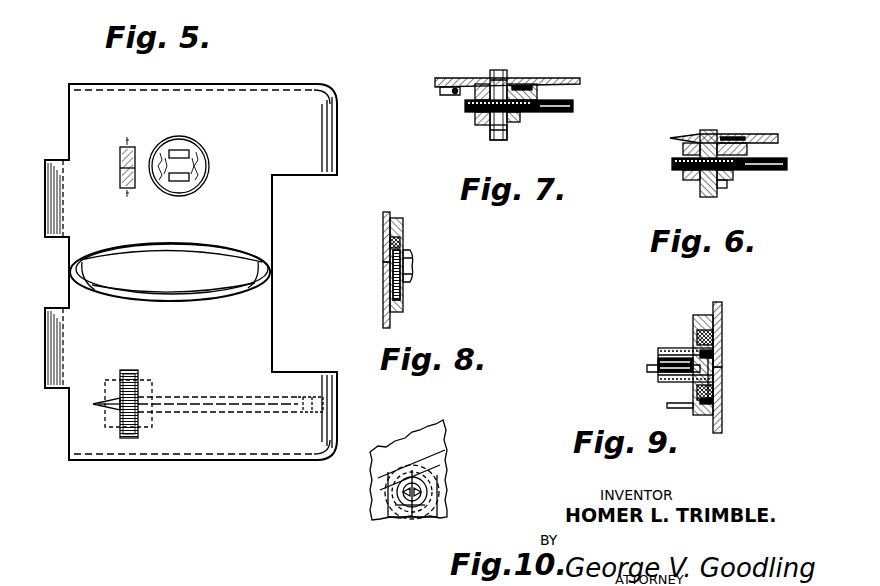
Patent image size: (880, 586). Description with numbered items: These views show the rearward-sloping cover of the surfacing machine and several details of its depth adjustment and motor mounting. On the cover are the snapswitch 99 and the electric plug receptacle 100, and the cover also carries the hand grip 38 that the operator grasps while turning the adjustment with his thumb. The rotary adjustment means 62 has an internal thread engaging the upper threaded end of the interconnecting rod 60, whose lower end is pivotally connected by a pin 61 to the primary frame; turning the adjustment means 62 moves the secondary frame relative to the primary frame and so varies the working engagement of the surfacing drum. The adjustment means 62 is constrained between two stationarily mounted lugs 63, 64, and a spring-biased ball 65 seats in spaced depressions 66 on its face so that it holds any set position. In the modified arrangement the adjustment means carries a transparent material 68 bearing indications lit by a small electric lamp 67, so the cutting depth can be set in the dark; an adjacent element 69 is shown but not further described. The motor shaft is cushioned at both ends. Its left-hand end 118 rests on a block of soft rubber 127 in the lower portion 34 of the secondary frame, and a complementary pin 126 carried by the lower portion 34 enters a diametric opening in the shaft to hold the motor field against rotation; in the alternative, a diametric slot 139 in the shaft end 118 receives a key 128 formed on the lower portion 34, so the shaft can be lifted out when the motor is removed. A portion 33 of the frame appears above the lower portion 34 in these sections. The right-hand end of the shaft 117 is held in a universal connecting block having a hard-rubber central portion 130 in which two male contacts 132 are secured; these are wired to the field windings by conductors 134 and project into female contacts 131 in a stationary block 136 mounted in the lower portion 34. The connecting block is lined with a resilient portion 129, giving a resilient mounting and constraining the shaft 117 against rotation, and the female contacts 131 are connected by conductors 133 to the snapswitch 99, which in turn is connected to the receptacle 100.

In FIG. 8, the front plate 33 is at (383, 226).
In FIG. 9, the front plate 33 is at (722, 318).
In FIG. 10, the front plate 33 is at (378, 478).
In FIG. 7, the lower portion of the secondary frame 34 is at (568, 78).
In FIG. 6, the lower portion of the secondary frame 34 is at (780, 130).
In FIG. 8, the lower portion of the secondary frame 34 is at (383, 312).
In FIG. 9, the lower portion of the secondary frame 34 is at (722, 428).
In FIG. 10, the lower portion of the secondary frame 34 is at (382, 520).
In FIG. 5, the hand grip 38 is at (200, 300).
In FIG. 5, the interconnecting rod 60 is at (244, 412).
In FIG. 7, the interconnecting rod 60 is at (573, 103).
In FIG. 6, the interconnecting rod 60 is at (780, 170).
In FIG. 5, the pin 61 is at (314, 412).
In FIG. 5, the rotary adjustment means 62 is at (120, 428).
In FIG. 6, the rotary adjustment means 62 is at (708, 197).
In FIG. 5, the lug 63 is at (138, 382).
In FIG. 7, the lug 63 is at (520, 117).
In FIG. 6, the lug 63 is at (733, 180).
In FIG. 5, the lug 64 is at (108, 380).
In FIG. 6, the lug 64 is at (692, 180).
In FIG. 7, the ball 65 is at (522, 84).
In FIG. 6, the ball 65 is at (722, 143).
In FIG. 7, the depressions 66 is at (507, 130).
In FIG. 6, the depressions 66 is at (722, 188).
In FIG. 7, the electric lamp 67 is at (455, 95).
In FIG. 7, the transparent material 68 is at (505, 60).
In FIG. 7, the bearing 69 is at (480, 125).
In FIG. 5, the snapswitch 99 is at (120, 168).
In FIG. 5, the electric plug receptacle 100 is at (208, 158).
In FIG. 9, the shaft 117 is at (668, 348).
In FIG. 8, the shaft 118 is at (412, 258).
In FIG. 10, the shaft 118 is at (422, 510).
In FIG. 8, the pin 126 is at (393, 270).
In FIG. 8, the block of soft rubber 127 is at (390, 242).
In FIG. 10, the key 128 is at (412, 520).
In FIG. 9, the resilient portion 129 is at (713, 340).
In FIG. 9, the central portion 130 is at (713, 354).
In FIG. 10, the central portion 130 is at (434, 470).
In FIG. 9, the female contacts 131 is at (713, 402).
In FIG. 9, the male contacts 132 is at (713, 385).
In FIG. 9, the conductors 133 is at (680, 408).
In FIG. 9, the conductors 134 is at (652, 365).
In FIG. 9, the stationary block 136 is at (697, 393).
In FIG. 10, the slot 139 is at (422, 486).